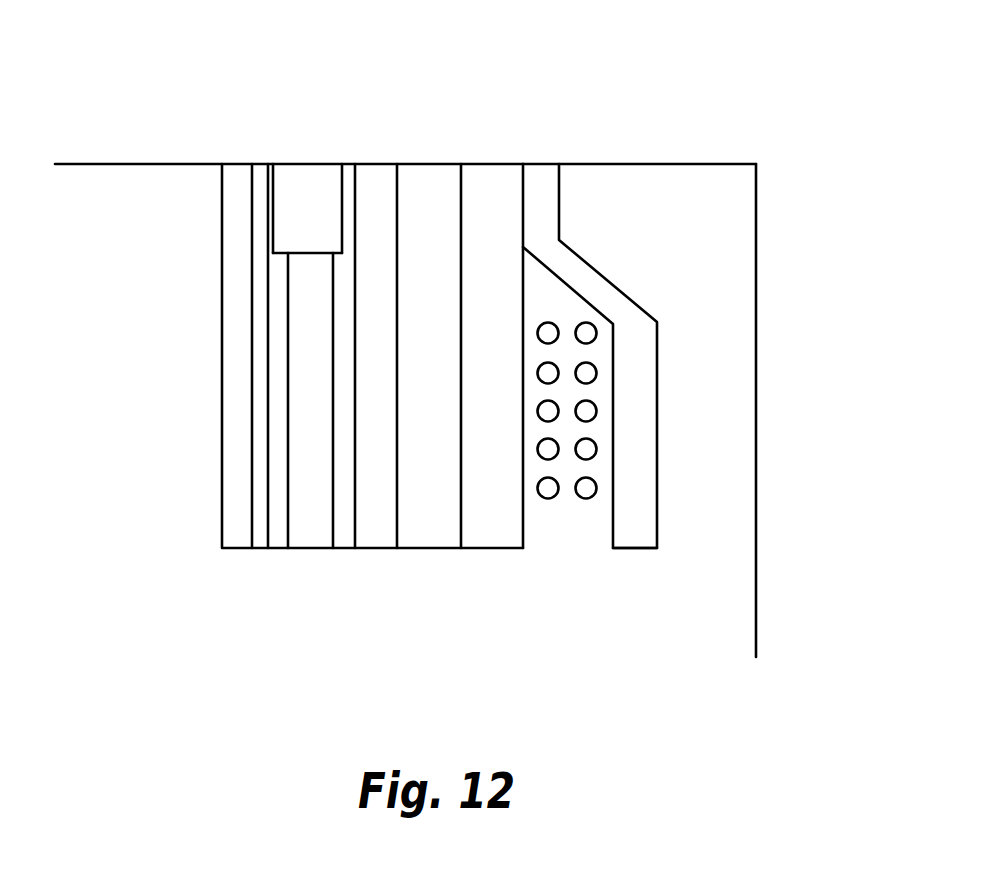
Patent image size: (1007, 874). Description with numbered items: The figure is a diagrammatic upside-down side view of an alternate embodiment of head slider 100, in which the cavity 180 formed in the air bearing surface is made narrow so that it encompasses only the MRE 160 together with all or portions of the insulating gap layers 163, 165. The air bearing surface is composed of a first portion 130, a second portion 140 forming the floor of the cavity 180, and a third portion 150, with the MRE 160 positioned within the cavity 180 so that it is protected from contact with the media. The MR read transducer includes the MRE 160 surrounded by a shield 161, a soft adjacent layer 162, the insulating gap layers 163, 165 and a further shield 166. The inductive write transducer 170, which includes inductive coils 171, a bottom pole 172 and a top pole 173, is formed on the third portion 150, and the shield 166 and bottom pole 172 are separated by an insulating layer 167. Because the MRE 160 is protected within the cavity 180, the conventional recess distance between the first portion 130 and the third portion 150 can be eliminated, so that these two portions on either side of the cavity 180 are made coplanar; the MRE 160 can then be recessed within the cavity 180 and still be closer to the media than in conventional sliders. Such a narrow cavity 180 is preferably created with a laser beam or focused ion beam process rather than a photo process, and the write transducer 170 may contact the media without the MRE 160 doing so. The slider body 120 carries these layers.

The head slider 100 is at (822, 133).
The substrate 120 is at (758, 398).
The first portion of the ABS 130 is at (88, 163).
The second portion of the ABS 140 is at (298, 250).
The third portion of the ABS 150 is at (623, 165).
The MRE 160 is at (315, 552).
The shield 161 is at (229, 550).
The soft adjacent layer (SAL) 162 is at (258, 552).
The insulating gap layer 163 is at (282, 552).
The insulating gap layer 165 is at (345, 552).
The shield 166 is at (388, 552).
The insulating layer 167 is at (443, 552).
The inductive write transducer 170 is at (527, 120).
The inductive coils 171 is at (558, 500).
The bottom pole 172 is at (500, 552).
The top pole 173 is at (640, 545).
The cavity 180 is at (293, 158).